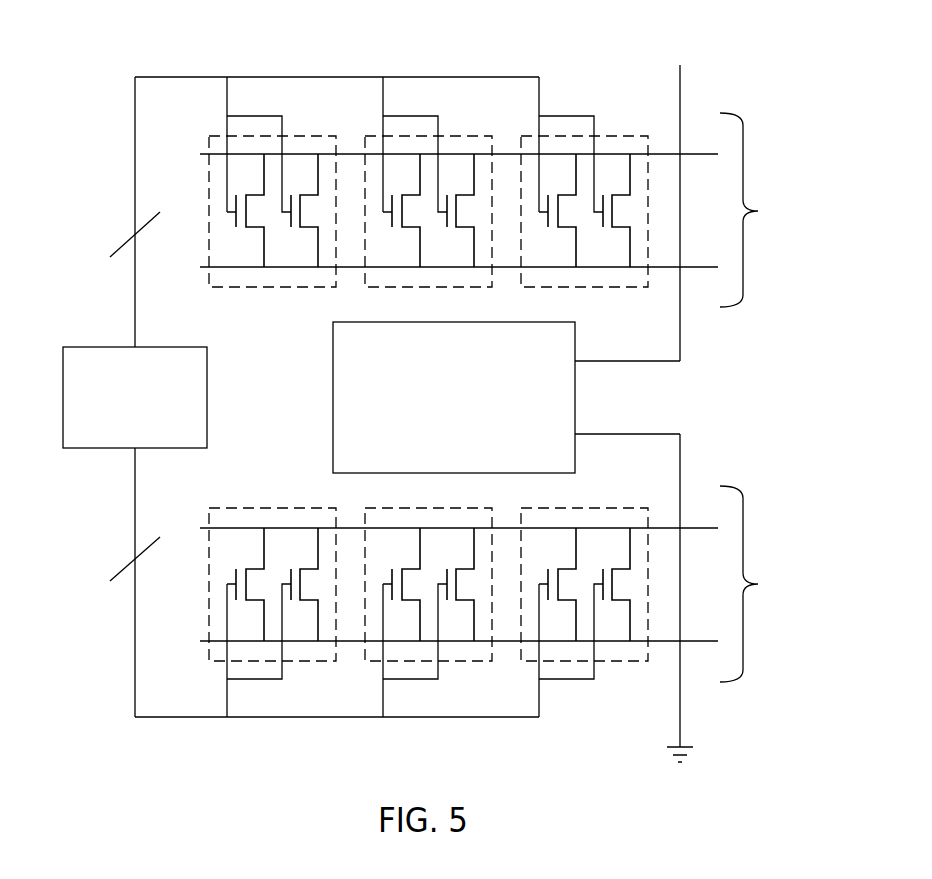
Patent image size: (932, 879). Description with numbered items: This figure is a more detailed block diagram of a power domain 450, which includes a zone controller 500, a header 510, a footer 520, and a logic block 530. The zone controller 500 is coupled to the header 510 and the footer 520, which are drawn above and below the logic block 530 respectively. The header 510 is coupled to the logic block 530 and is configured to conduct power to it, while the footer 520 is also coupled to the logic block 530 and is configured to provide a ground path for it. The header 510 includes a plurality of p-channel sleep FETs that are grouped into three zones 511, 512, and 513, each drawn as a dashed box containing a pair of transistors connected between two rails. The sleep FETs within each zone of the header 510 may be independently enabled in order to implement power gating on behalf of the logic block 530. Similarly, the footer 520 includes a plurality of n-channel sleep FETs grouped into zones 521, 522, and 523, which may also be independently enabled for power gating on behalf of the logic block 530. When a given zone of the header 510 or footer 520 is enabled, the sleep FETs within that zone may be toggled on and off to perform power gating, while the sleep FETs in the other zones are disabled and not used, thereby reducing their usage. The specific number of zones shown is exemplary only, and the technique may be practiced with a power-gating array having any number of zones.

The power domain 450 is at (807, 63).
The zone controller 500 is at (118, 432).
The header 510 is at (477, 214).
The zone 511 is at (263, 287).
The zone 512 is at (437, 287).
The zone 513 is at (598, 287).
The footer 520 is at (473, 580).
The zone 521 is at (267, 508).
The zone 522 is at (435, 508).
The zone 523 is at (595, 508).
The logic block 530 is at (437, 418).